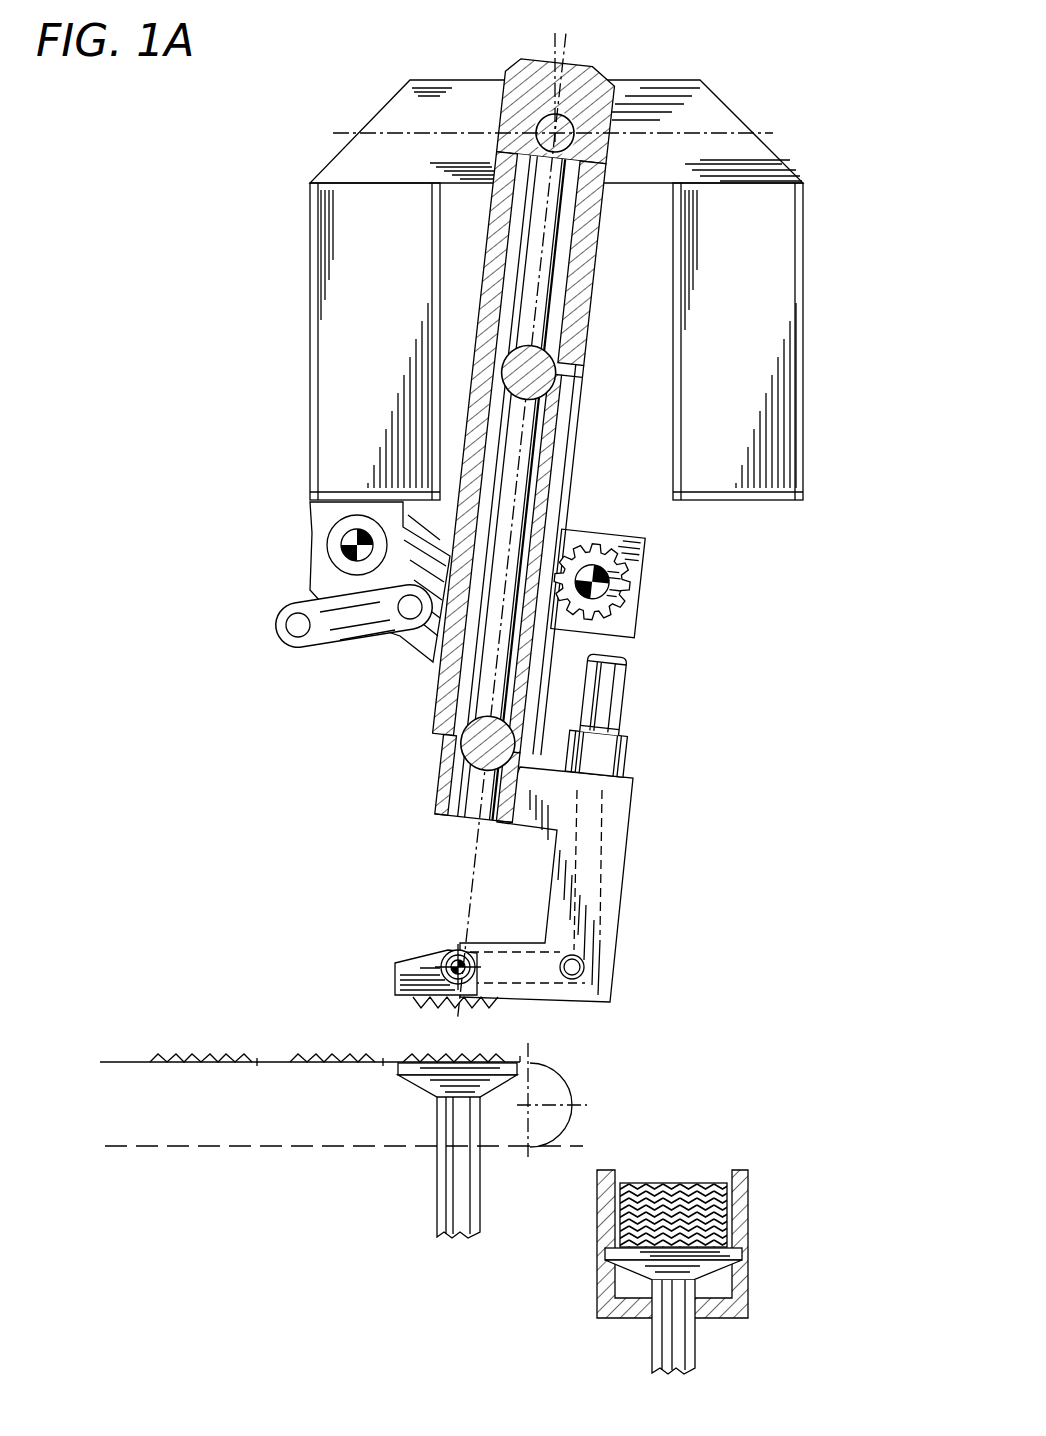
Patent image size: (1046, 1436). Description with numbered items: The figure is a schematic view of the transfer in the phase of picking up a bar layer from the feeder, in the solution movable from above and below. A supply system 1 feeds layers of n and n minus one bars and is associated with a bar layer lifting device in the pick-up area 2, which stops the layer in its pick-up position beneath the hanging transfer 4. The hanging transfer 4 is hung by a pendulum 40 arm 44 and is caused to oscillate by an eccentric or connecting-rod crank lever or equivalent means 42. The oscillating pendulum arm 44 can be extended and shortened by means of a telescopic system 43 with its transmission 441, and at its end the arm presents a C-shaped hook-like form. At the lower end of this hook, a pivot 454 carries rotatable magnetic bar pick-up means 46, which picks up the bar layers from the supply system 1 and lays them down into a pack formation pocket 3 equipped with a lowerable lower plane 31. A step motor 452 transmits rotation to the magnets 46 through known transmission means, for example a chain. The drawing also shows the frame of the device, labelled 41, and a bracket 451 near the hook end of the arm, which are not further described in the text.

The supply system 1 is at (110, 1062).
The pick-up area 2 is at (437, 1192).
The pack formation pocket 3 is at (748, 1228).
The lowerable lower plane 31 is at (650, 1342).
The hanging transfer 4 is at (730, 557).
The pendulum 40 is at (603, 72).
The frame 41 is at (726, 120).
The eccentric or connecting-rod crank lever 42 is at (307, 580).
The telescopic system 43 is at (563, 363).
The pendulum arm 44 is at (587, 290).
The transmission 441 is at (640, 587).
The L-shaped bracket 451 is at (608, 913).
The step motor 452 is at (628, 710).
The pivot 454 is at (445, 957).
The magnetic bar pick-up means 46 is at (395, 975).